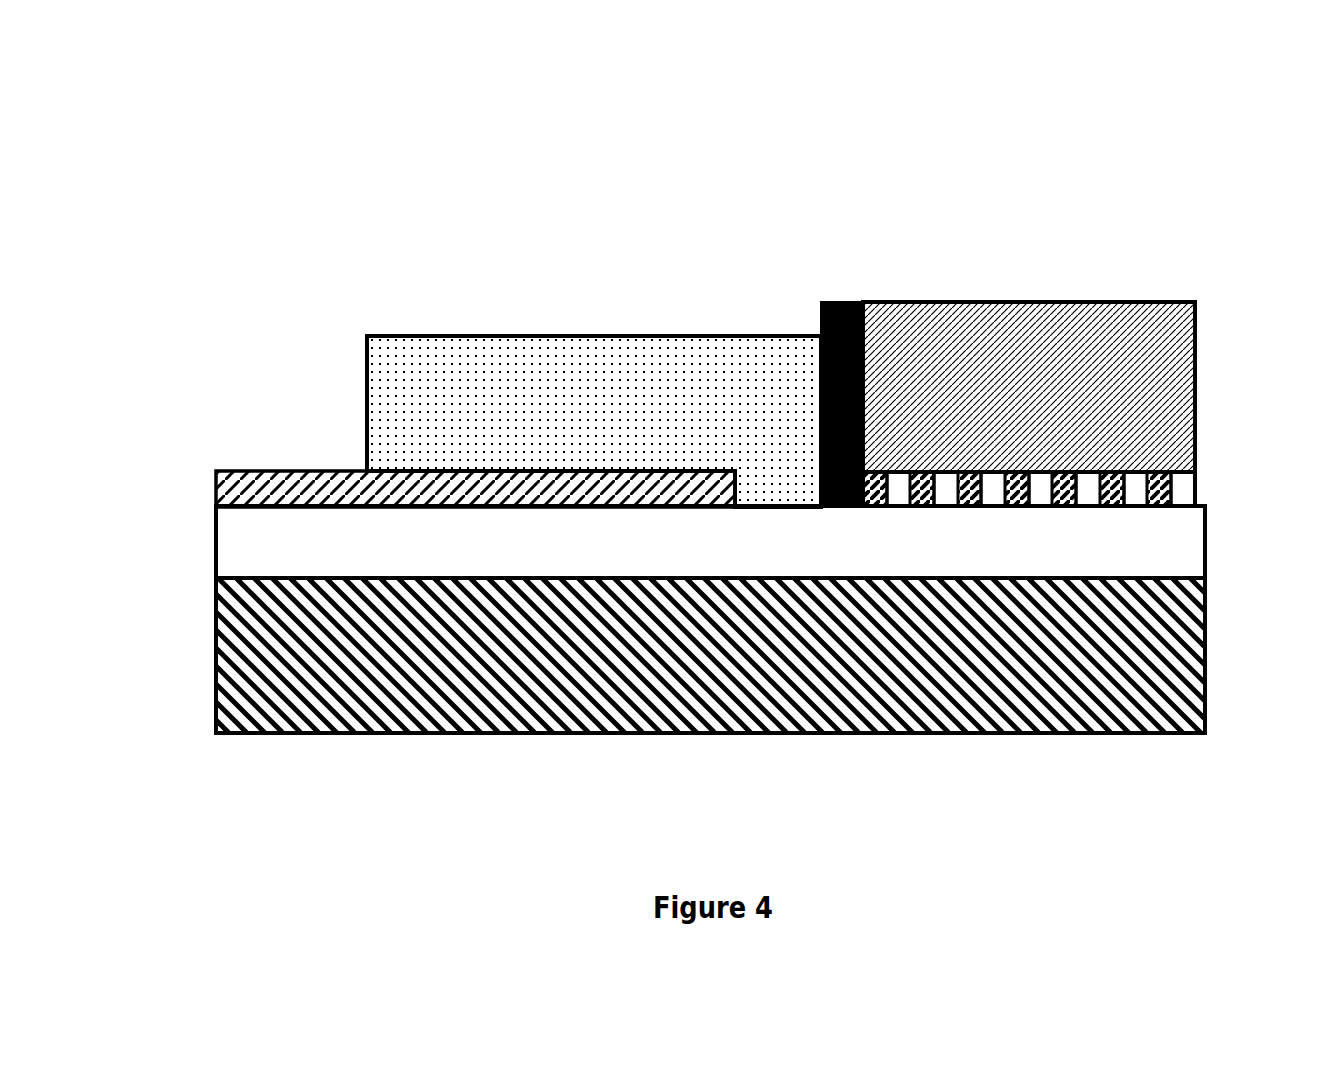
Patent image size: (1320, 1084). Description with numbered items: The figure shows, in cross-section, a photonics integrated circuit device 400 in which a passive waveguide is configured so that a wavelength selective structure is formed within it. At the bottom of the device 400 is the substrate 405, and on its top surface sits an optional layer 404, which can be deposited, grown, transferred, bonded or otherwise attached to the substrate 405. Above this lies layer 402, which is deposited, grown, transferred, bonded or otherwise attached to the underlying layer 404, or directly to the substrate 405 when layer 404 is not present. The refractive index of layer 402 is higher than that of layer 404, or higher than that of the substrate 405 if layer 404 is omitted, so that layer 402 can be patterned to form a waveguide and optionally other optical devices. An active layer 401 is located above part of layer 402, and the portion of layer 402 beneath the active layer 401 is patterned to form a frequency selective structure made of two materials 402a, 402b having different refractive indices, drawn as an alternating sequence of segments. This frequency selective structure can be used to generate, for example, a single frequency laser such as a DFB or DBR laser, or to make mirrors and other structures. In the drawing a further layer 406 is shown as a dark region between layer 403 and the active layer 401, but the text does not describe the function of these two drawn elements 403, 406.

The photonics integrated circuit device 400 is at (388, 140).
The active layer 401 is at (1152, 323).
The layer 402 is at (277, 480).
The material 402a is at (1170, 483).
The material 402b is at (1197, 492).
The active layer 403 is at (546, 392).
The optional layer 404 is at (237, 541).
The substrate 405 is at (237, 645).
The contact layer 406 is at (821, 318).